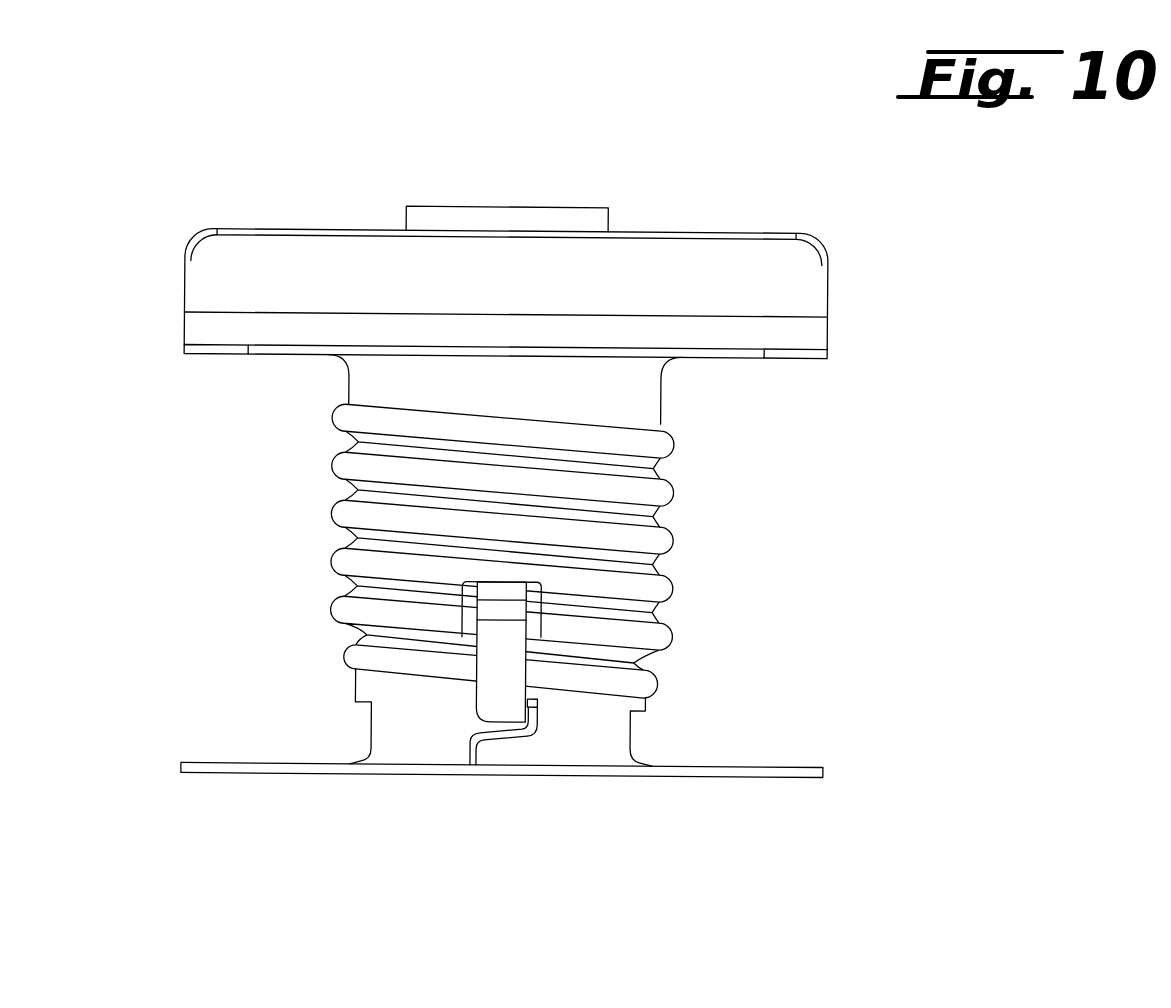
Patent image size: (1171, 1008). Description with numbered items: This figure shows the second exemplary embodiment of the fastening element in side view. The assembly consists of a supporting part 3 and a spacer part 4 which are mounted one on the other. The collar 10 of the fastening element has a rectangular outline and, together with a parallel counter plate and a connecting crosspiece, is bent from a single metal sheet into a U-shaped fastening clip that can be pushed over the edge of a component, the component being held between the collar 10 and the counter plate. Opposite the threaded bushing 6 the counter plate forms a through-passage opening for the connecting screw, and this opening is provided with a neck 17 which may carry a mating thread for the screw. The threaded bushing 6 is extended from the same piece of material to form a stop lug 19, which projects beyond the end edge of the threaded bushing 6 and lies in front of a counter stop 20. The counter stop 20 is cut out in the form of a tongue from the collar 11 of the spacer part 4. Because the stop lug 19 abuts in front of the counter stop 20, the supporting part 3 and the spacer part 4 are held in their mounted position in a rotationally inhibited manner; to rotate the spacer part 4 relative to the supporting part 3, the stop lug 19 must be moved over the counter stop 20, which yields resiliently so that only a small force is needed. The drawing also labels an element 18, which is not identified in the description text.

The supporting part 3 is at (730, 403).
The spacer part 4 is at (710, 716).
The threaded bushing 6 is at (657, 493).
The collar 10 is at (780, 353).
The collar 11 is at (773, 768).
The neck 17 is at (545, 207).
The cap 18 is at (803, 285).
The stop lug 19 is at (505, 658).
The counter stop 20 is at (537, 718).